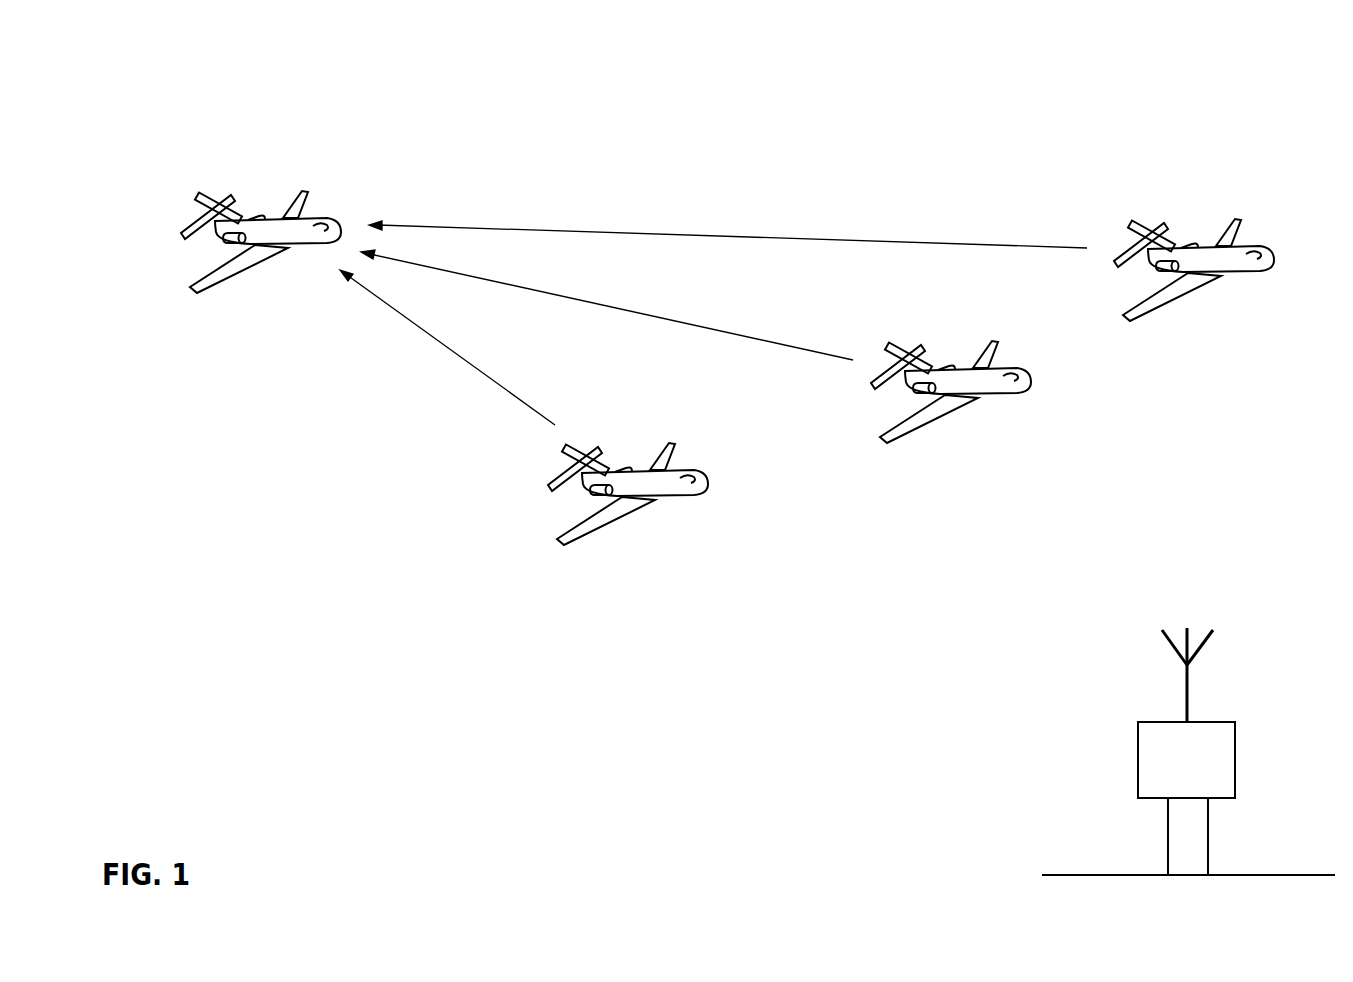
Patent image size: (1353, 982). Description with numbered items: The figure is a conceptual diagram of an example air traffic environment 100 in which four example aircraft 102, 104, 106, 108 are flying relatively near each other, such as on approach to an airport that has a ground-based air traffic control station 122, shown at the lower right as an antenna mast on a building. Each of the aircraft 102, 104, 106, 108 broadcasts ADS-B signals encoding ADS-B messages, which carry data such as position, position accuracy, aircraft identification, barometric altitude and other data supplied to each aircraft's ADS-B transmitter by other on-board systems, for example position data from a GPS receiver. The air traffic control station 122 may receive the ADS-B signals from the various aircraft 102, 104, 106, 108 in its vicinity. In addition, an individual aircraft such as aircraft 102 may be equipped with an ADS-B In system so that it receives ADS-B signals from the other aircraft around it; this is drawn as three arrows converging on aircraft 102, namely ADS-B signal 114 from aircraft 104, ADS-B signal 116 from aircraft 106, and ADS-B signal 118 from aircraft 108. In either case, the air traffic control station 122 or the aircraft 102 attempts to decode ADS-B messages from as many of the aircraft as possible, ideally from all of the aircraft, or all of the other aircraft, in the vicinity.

The air traffic environment 100 is at (177, 118).
The aircraft 102 is at (249, 305).
The aircraft 104 is at (673, 523).
The aircraft 106 is at (1003, 433).
The aircraft 108 is at (1234, 177).
The ADS-B signal 114 is at (459, 364).
The ADS-B signal 116 is at (749, 329).
The ADS-B signal 118 is at (865, 231).
The ground-based air traffic control station 122 is at (1218, 710).